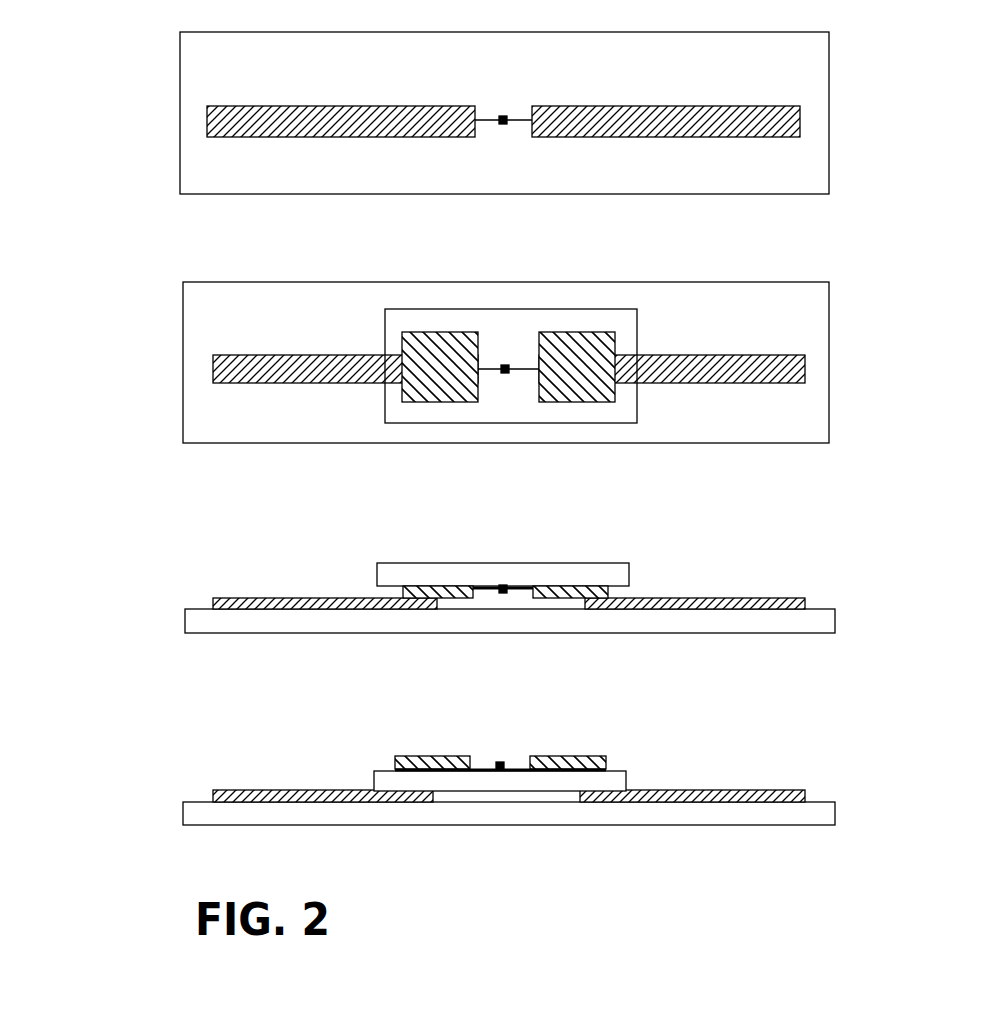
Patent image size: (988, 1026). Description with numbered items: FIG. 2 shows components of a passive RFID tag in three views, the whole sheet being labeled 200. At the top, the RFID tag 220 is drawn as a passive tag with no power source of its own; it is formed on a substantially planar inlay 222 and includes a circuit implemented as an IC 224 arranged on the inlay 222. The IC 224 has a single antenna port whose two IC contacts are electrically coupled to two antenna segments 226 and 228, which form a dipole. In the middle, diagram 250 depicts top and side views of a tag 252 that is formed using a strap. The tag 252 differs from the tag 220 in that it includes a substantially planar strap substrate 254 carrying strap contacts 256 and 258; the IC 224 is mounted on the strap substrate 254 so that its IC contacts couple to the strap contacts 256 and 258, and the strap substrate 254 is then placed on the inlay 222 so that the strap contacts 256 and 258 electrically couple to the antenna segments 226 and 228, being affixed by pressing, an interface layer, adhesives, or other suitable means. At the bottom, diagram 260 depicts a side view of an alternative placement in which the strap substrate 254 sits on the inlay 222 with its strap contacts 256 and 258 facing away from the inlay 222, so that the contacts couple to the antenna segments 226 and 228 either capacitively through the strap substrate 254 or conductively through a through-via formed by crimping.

The layout view of filter assembly 200 is at (73, 20).
The RFID tag 220 is at (178, 107).
The inlay 222 is at (813, 72).
The IC 224 is at (503, 116).
The antenna segment 226 is at (372, 122).
The antenna segment 228 is at (653, 122).
The diagram 250 is at (67, 292).
The tag 252 is at (176, 449).
The strap substrate 254 is at (397, 423).
The strap contact 256 is at (447, 397).
The strap contact 258 is at (593, 400).
The diagram 260 is at (68, 781).